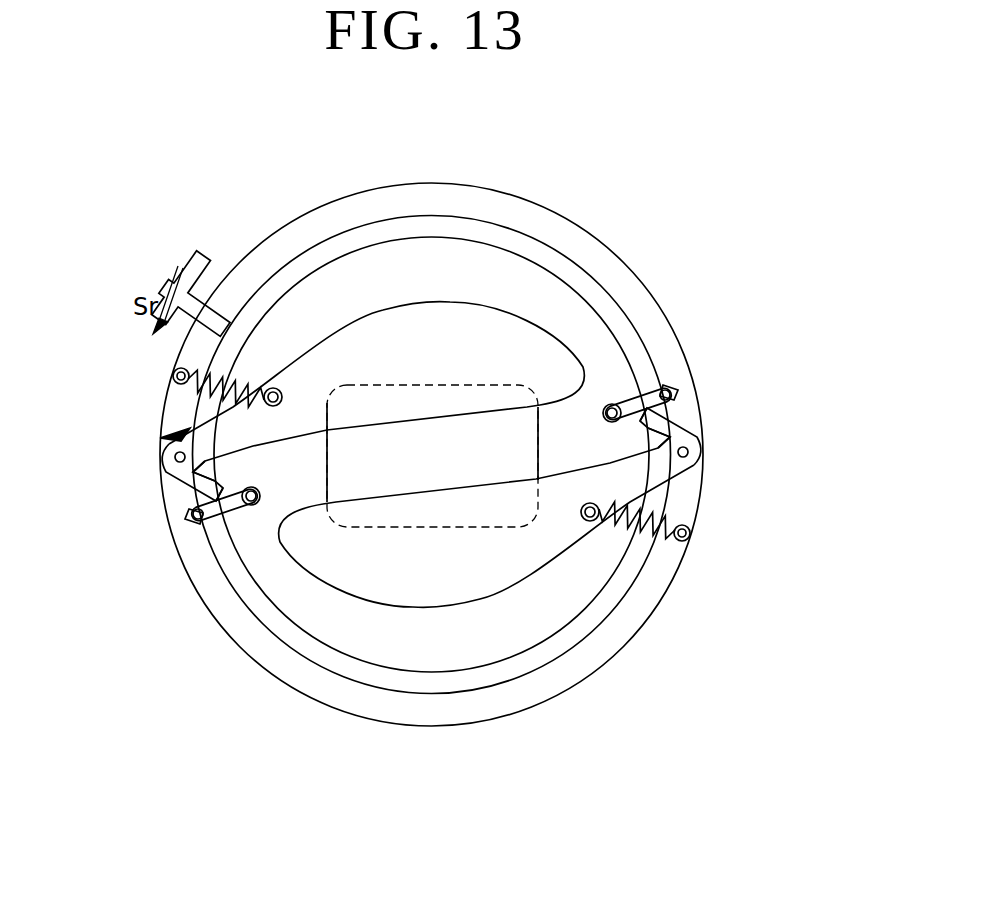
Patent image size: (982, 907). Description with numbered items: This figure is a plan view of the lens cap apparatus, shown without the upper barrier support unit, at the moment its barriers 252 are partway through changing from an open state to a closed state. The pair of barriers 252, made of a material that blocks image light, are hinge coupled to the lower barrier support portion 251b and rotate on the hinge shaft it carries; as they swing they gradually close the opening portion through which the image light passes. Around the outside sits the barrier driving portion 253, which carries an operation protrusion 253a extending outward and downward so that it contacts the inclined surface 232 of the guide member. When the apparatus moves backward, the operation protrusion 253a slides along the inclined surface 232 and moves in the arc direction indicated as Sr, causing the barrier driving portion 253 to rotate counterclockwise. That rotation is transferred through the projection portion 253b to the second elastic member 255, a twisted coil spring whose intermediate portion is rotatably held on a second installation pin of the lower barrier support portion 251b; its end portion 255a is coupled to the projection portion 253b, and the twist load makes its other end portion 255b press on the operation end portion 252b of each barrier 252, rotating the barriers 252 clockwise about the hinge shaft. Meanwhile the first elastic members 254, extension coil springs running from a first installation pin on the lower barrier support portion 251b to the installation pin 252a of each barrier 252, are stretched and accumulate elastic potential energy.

The inclined surface 232 is at (192, 263).
The lower barrier support portion 251b is at (555, 228).
The barrier 252 is at (413, 330).
The installation pin 252a is at (593, 522).
The operation end portion 252b is at (645, 410).
The barrier driving portion 253 is at (585, 288).
The operation protrusion 253a is at (192, 267).
The projection portion 253b is at (666, 393).
The first elastic member 254 is at (657, 540).
The second elastic member 255 is at (620, 402).
The end portion 255a is at (666, 390).
The end portion 255b is at (688, 432).